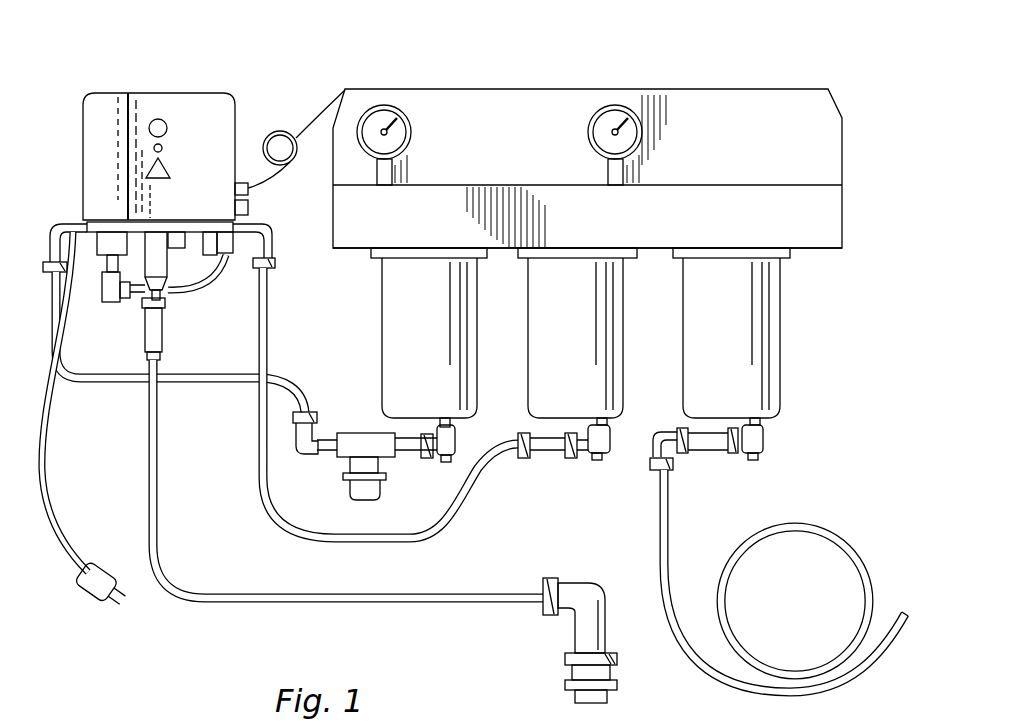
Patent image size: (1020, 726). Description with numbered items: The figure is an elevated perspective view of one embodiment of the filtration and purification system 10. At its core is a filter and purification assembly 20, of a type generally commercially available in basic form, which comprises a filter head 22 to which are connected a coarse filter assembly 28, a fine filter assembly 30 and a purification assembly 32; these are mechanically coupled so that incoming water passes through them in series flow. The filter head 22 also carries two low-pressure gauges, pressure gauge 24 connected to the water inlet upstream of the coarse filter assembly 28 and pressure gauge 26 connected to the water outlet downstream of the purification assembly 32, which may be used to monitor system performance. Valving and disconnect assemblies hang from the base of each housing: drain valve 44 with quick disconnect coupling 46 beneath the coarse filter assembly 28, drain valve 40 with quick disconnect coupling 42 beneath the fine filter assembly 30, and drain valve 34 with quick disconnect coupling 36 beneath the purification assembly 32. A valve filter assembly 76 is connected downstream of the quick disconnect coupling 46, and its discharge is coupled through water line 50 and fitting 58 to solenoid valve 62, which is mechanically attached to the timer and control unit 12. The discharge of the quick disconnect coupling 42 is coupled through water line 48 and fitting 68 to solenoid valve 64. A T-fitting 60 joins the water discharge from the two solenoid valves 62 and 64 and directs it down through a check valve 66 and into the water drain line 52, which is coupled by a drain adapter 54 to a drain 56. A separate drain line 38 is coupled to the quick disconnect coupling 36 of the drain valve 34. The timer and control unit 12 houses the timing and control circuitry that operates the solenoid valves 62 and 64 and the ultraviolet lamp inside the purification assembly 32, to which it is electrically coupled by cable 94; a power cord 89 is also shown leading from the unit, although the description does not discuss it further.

The system 10 is at (136, 70).
The timer and control unit 12 is at (192, 95).
The filter and purification assembly 20 is at (766, 84).
The filter head 22 is at (678, 228).
The pressure gauge 24 is at (400, 120).
The pressure gauge 26 is at (635, 118).
The coarse filter assembly 28 is at (436, 408).
The fine filter assembly 30 is at (590, 408).
The purification assembly 32 is at (744, 408).
The drain valve 34 is at (766, 450).
The quick disconnect coupling 36 is at (718, 455).
The drain line 38 is at (672, 576).
The drain valve 40 is at (608, 455).
The quick disconnect coupling 42 is at (556, 460).
The drain valve 44 is at (457, 436).
The quick disconnect coupling 46 is at (424, 460).
The water line 48 is at (268, 365).
The water line 50 is at (126, 384).
The water drain line 52 is at (448, 603).
The drain adapter 54 is at (604, 600).
The drain 56 is at (615, 658).
The fitting 58 is at (75, 228).
The T-fitting 60 is at (156, 240).
The solenoid valve 62 is at (100, 262).
The solenoid valve 64 is at (212, 255).
The check valve 66 is at (147, 332).
The fitting 68 is at (272, 245).
The valve filter assembly 76 is at (334, 455).
The power cord 89 is at (76, 566).
The cable 94 is at (273, 130).